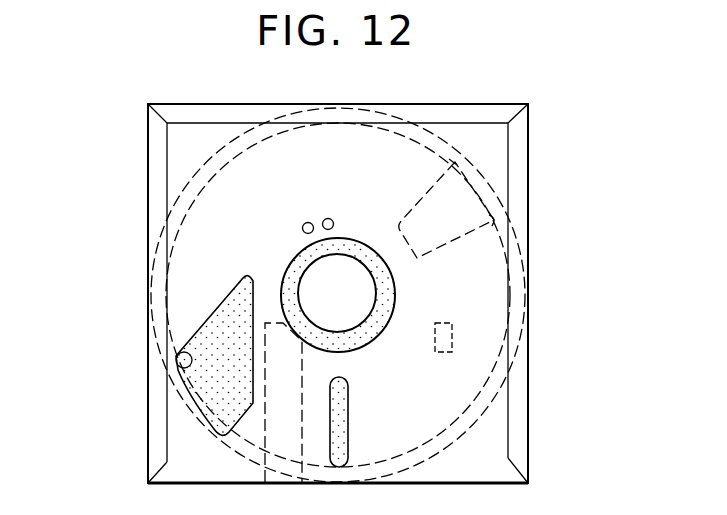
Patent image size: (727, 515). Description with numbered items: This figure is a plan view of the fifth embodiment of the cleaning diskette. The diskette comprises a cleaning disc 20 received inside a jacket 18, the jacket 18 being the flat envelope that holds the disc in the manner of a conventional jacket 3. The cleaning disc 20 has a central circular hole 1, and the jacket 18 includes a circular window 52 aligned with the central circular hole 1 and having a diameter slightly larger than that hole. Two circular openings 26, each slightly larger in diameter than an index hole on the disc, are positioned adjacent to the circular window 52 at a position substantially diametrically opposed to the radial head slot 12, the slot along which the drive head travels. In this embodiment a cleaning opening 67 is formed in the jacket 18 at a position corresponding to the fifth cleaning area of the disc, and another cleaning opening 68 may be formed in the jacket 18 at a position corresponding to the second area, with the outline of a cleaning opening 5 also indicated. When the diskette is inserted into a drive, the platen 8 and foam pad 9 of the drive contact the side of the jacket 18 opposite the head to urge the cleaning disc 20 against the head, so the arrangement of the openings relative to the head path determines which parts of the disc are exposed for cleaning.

The jacket 3 is at (148, 159).
The jacket 18 is at (148, 247).
The cleaning disc 20 is at (455, 151).
The cleaning opening 5 is at (474, 394).
The cleaning opening 68 is at (492, 221).
The circular window 52 is at (395, 299).
The central circular hole 1 is at (368, 288).
The circular openings 26 is at (325, 218).
The foam pad 9 is at (453, 322).
The cleaning opening 67 is at (178, 368).
The platen 8 is at (262, 432).
The radial head slot 12 is at (348, 437).